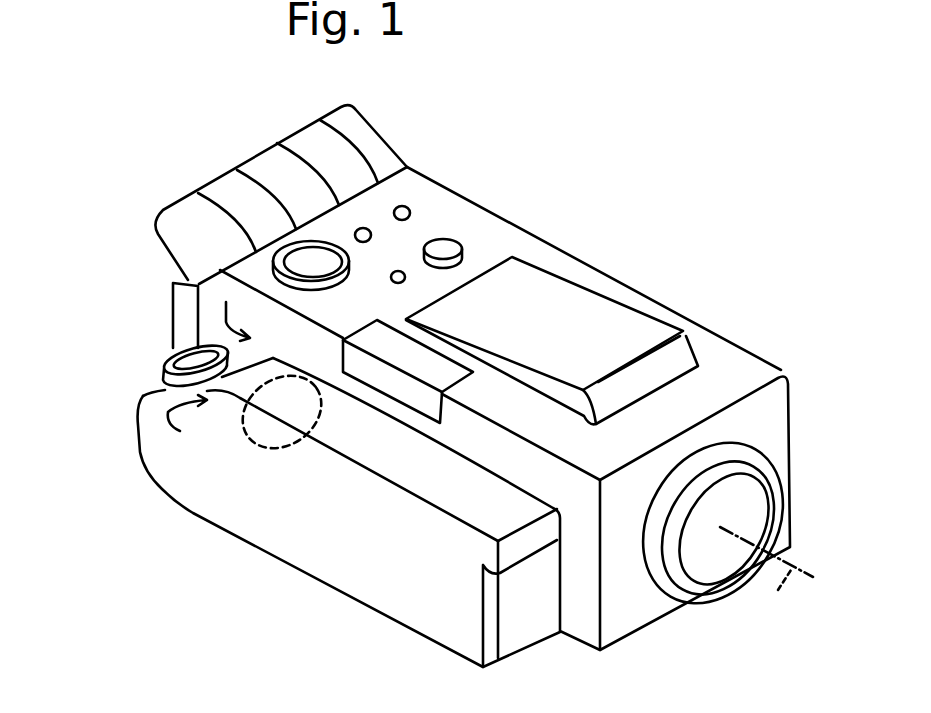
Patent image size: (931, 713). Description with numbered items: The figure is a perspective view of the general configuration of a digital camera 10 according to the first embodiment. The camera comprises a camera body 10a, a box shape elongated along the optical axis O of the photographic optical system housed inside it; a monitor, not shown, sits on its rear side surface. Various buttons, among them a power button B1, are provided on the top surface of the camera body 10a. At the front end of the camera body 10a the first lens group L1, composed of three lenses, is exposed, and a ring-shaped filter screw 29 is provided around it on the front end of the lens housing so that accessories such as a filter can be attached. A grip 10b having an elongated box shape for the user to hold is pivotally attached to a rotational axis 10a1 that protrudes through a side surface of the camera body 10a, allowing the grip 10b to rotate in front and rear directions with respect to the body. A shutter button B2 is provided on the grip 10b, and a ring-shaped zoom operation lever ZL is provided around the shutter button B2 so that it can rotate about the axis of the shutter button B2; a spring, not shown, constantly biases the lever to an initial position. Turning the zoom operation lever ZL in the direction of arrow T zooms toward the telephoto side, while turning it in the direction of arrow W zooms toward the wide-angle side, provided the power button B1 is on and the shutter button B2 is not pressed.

The digital camera 10 is at (632, 129).
The camera body 10a is at (515, 246).
The grip 10b is at (276, 533).
The rotational axis 10a1 is at (263, 443).
The filter screw 29 is at (775, 498).
The first lens group L1 is at (748, 527).
The optical axis O is at (779, 593).
The power button B1 is at (396, 283).
The shutter button B2 is at (163, 351).
The zoom operation lever ZL is at (165, 369).
The arrow T (telephoto direction) T is at (230, 315).
The arrow W (wide-angle direction) W is at (186, 425).